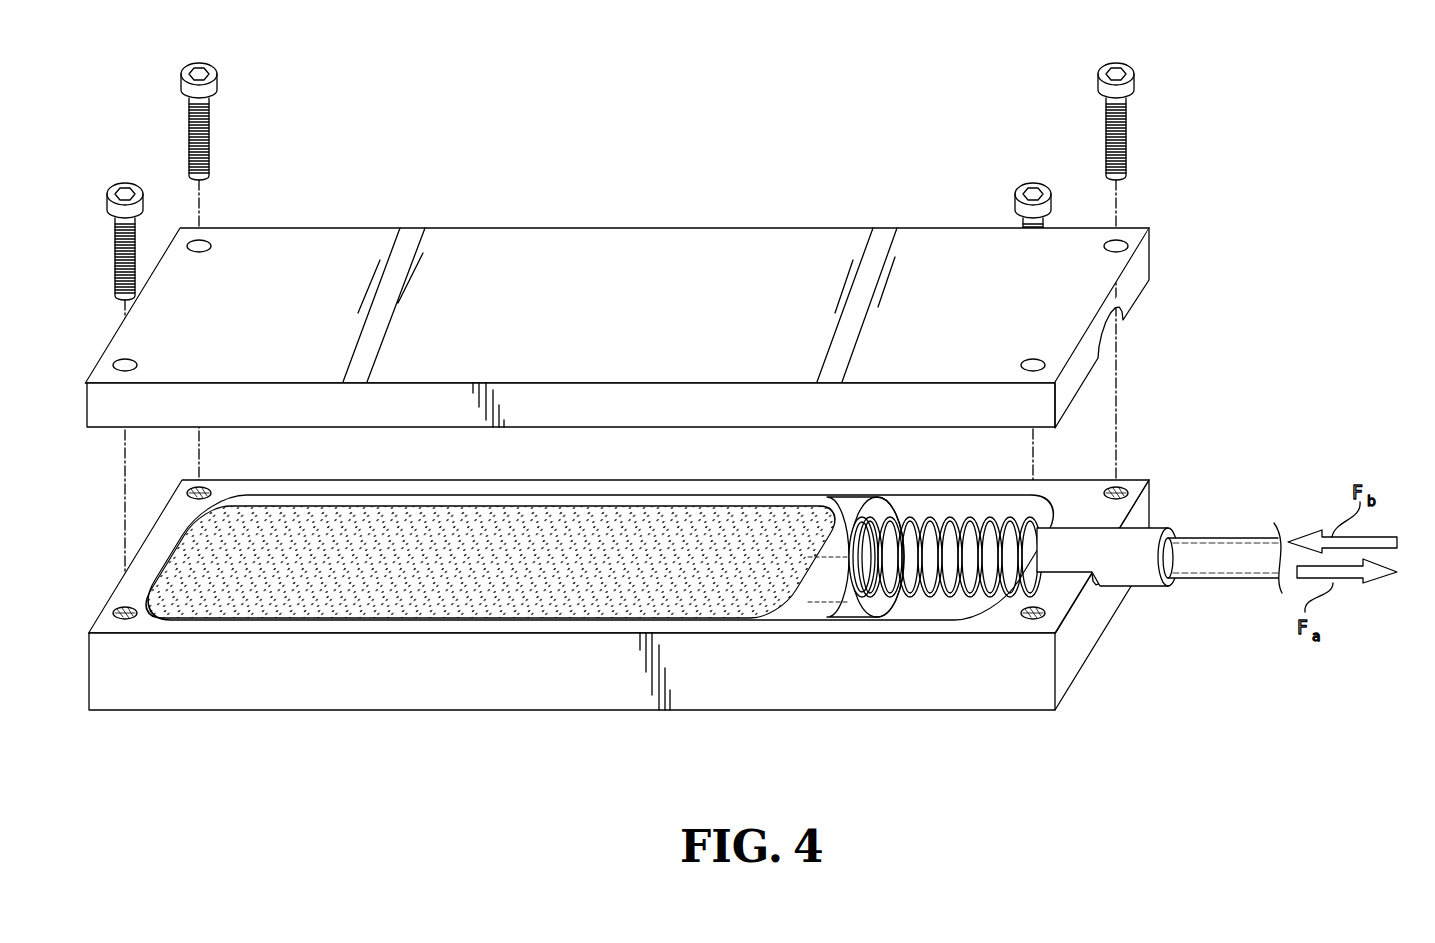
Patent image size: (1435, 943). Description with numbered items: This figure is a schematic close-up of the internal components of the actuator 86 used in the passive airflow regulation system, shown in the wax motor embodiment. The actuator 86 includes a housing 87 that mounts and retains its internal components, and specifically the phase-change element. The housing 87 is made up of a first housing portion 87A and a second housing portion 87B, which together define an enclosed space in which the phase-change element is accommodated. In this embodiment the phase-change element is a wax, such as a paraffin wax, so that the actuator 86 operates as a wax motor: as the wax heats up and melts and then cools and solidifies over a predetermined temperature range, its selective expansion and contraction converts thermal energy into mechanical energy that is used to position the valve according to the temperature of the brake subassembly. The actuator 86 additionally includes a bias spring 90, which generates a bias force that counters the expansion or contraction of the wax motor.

The actuator 86 is at (858, 140).
The housing 87 is at (1156, 424).
The first housing portion 87A is at (903, 678).
The second housing portion 87B is at (633, 253).
The bias spring 90 is at (970, 522).